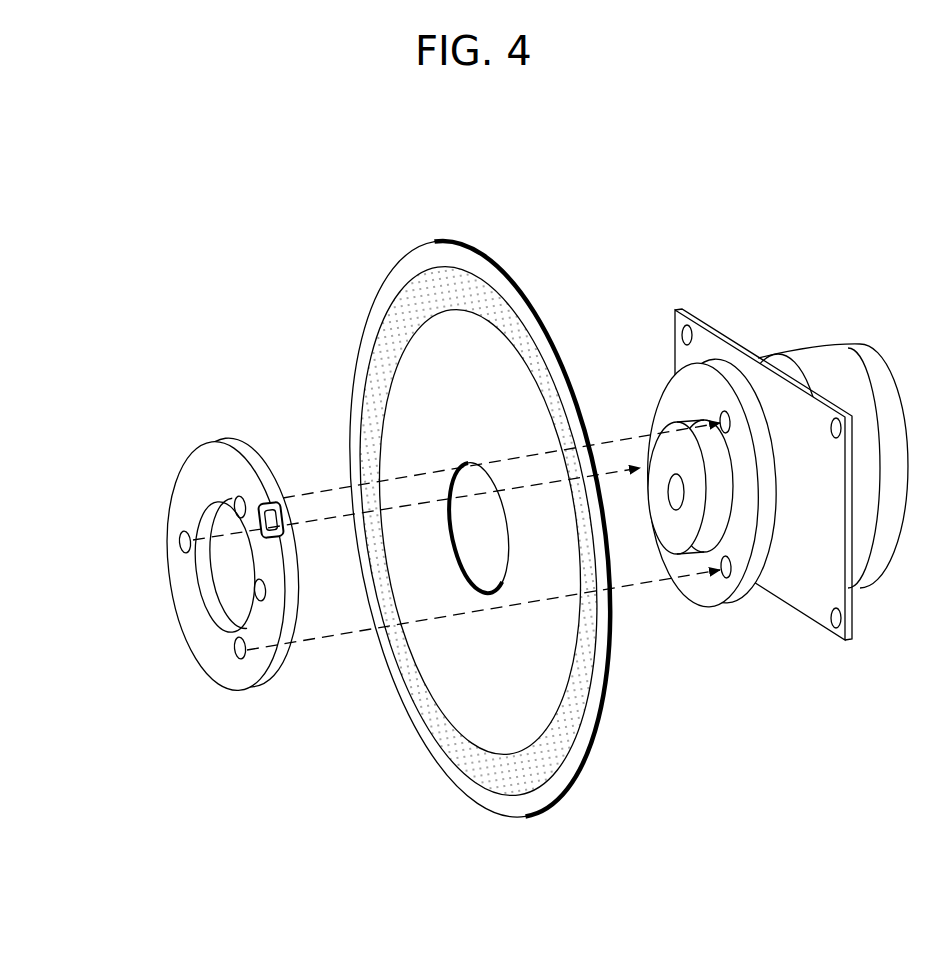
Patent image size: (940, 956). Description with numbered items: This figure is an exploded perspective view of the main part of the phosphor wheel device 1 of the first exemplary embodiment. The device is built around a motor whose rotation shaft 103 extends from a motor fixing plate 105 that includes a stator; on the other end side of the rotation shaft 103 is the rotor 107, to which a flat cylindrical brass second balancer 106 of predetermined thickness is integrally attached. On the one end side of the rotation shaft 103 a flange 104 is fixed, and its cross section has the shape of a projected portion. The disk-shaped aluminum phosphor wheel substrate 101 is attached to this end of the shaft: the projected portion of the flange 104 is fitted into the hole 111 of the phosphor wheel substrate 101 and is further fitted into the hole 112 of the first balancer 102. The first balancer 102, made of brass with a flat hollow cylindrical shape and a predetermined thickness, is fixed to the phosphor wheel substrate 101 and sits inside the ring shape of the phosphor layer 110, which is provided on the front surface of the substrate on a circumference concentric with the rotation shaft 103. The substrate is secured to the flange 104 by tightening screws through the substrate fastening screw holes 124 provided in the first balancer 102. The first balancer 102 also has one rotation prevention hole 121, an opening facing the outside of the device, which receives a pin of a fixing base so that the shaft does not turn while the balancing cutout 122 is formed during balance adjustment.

The phosphor wheel device 1 is at (250, 233).
The phosphor wheel substrate 101 is at (533, 695).
The first balancer 102 is at (193, 478).
The rotation shaft 103 is at (672, 487).
The flange 104 is at (720, 588).
The motor fixing plate 105 is at (805, 592).
The second balancer 106 is at (865, 374).
The rotor 107 is at (823, 380).
The phosphor layer 110 is at (465, 292).
The hole 111 is at (492, 540).
The hole 112 is at (227, 580).
The rotation prevention hole 121 is at (263, 597).
The balancing cutout 122 is at (272, 503).
The substrate fastening screw holes 124 is at (237, 506).